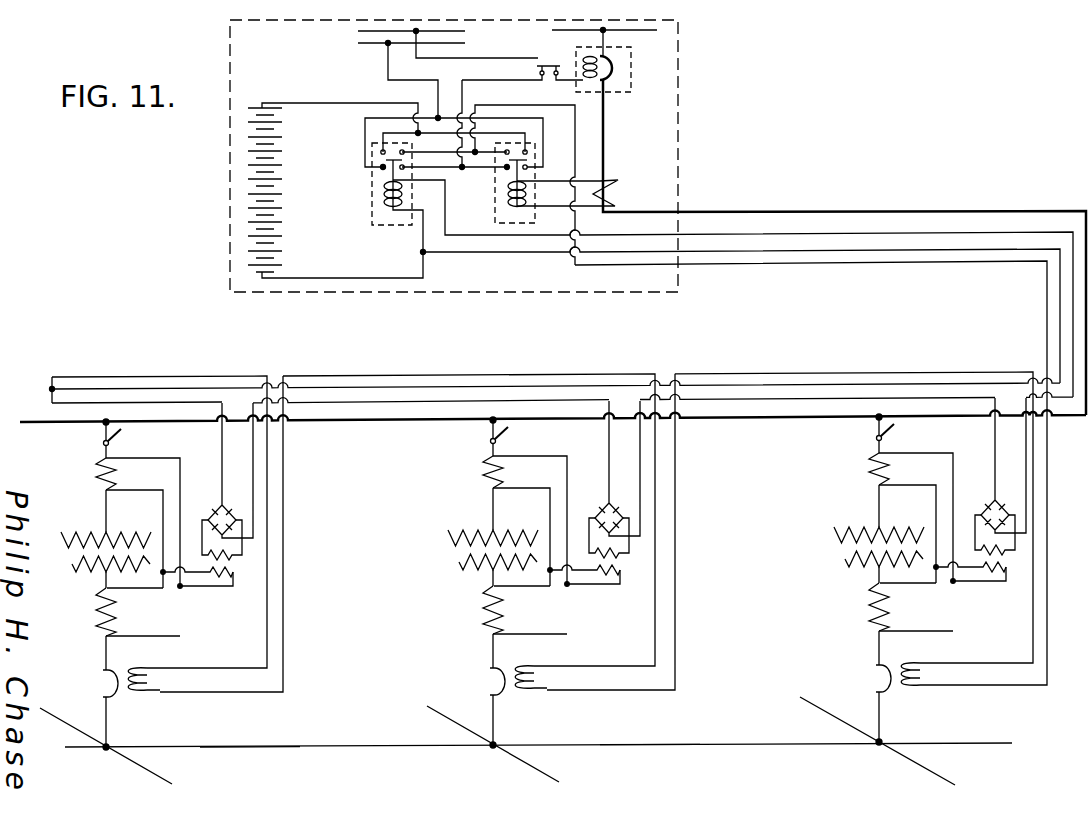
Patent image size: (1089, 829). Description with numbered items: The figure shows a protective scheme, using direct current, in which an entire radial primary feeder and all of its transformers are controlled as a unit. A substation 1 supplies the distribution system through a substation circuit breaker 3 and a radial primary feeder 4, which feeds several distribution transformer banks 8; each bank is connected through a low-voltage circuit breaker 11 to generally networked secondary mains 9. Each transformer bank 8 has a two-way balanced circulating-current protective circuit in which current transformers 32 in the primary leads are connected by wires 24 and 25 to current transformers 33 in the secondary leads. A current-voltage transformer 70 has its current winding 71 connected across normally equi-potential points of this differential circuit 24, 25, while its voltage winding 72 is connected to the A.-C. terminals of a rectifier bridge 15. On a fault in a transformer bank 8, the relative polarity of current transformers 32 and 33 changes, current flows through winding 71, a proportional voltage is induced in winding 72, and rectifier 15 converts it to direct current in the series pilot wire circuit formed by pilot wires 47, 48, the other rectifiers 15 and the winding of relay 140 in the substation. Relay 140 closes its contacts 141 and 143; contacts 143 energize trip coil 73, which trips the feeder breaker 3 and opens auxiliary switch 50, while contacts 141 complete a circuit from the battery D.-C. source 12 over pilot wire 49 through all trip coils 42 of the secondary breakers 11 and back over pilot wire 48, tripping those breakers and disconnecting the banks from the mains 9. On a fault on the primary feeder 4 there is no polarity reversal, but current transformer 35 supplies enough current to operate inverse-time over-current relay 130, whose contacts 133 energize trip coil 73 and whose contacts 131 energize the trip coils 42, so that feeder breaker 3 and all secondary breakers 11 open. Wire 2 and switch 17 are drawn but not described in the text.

The substation 1 is at (681, 94).
The supply line 2 is at (641, 32).
The substation circuit breaker 3 is at (618, 81).
The radial primary feeder 4 is at (847, 212).
The distribution transformer bank 8 is at (72, 550).
The secondary mains 9 is at (298, 747).
The low-voltage circuit breaker 11 is at (105, 676).
The D.-C. source 12 is at (276, 190).
The rectifier bridge 15 is at (237, 512).
The switch 17 is at (113, 438).
The wire 24 is at (155, 490).
The wire 25 is at (153, 636).
The current transformer 32 is at (98, 462).
The current transformer 33 is at (97, 616).
The current transformer 35 is at (612, 190).
The trip coil 42 is at (149, 680).
The pilot wire 47 is at (758, 237).
The pilot wire 48 is at (777, 254).
The pilot wire 49 is at (815, 264).
The auxiliary switch 50 is at (538, 74).
The current-voltage transformer 70 is at (236, 572).
The current winding 71 is at (250, 583).
The voltage winding 72 is at (236, 556).
The trip coil 73 is at (586, 56).
The inverse-time over-current relay 130 is at (528, 190).
The contacts 131 is at (527, 151).
The contacts 133 is at (530, 168).
The relay 140 is at (384, 201).
The contacts 141 is at (396, 152).
The contacts 143 is at (378, 173).